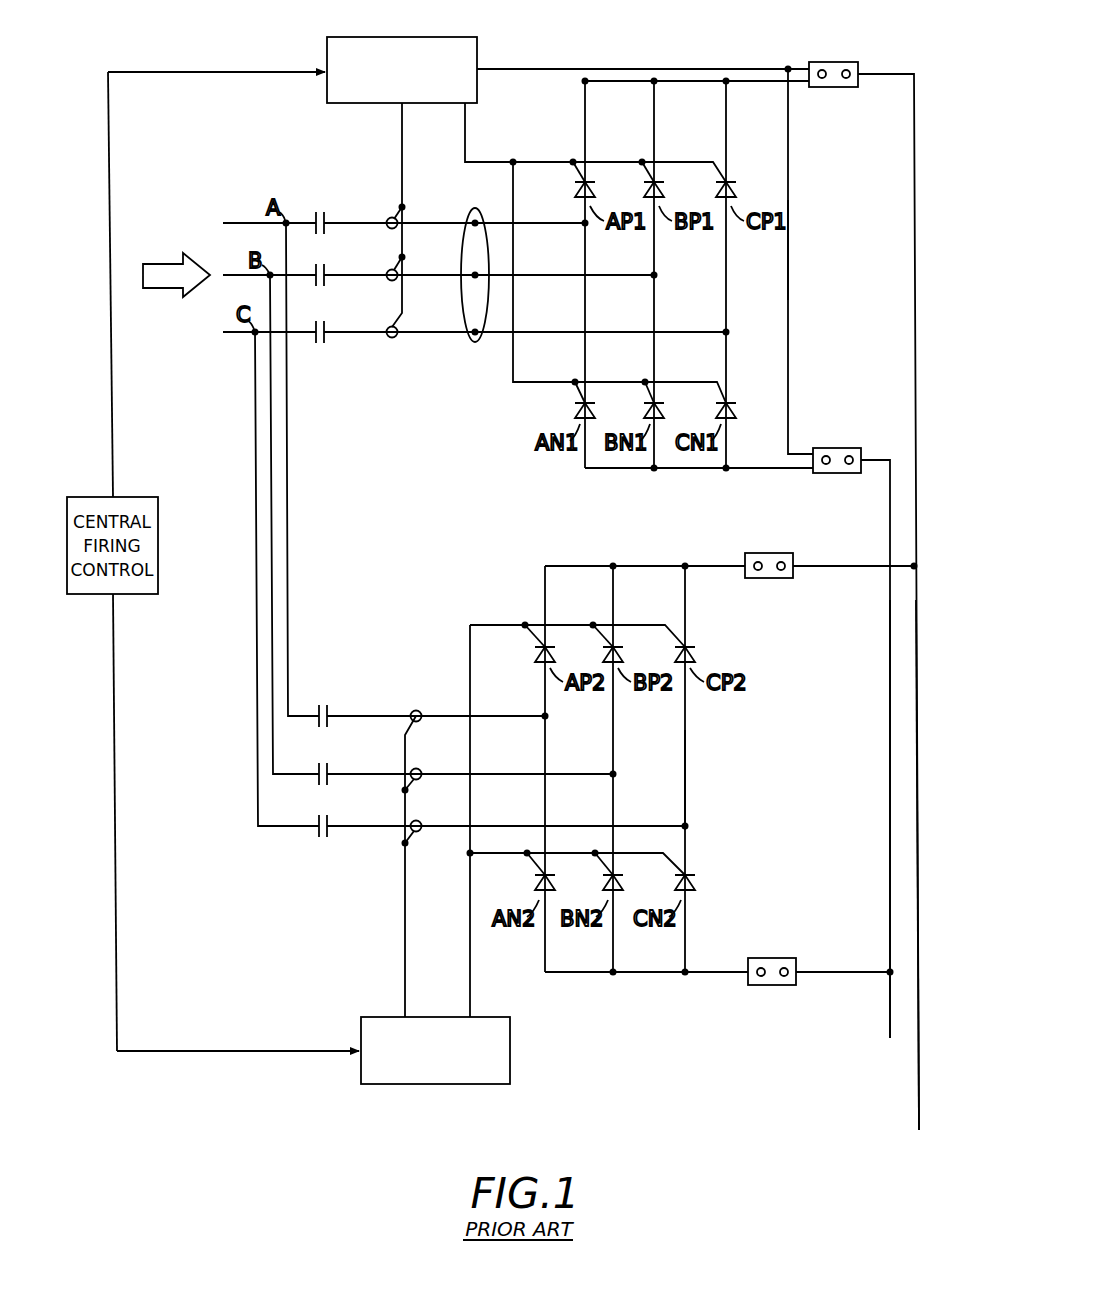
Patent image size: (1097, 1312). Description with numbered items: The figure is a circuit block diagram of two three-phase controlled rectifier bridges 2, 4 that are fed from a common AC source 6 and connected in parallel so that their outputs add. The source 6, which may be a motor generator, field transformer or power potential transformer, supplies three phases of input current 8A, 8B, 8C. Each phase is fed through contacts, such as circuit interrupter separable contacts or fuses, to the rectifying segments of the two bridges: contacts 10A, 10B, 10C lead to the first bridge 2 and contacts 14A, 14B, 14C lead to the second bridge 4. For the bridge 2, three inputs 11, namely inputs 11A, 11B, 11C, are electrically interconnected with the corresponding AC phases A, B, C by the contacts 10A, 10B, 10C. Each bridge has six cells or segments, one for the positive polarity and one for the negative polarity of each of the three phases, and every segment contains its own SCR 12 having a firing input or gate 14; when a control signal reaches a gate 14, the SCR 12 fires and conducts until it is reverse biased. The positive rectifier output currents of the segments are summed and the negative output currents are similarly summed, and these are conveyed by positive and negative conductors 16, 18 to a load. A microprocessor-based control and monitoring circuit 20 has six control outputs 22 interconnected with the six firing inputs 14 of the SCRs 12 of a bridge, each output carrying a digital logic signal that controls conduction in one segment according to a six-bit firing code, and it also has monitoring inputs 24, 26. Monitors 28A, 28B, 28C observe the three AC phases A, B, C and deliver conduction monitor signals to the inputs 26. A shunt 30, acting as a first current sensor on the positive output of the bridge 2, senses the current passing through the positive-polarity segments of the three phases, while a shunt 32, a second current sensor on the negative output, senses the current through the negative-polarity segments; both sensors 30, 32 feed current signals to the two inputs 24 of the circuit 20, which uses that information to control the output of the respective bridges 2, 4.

The controlled rectifier bridge 2 is at (862, 254).
The controlled rectifier bridge 4 is at (779, 789).
The AC source 6 is at (162, 262).
The phase current input 8A is at (236, 221).
The phase current input 8B is at (236, 273).
The phase current input 8C is at (240, 334).
The contact 10A is at (316, 212).
The contact 10B is at (324, 266).
The contact 10C is at (320, 344).
The inputs 11 is at (471, 212).
The input 11A is at (464, 234).
The input 11B is at (464, 287).
The input 11C is at (464, 343).
The SCR 12 is at (590, 197).
The firing input 14 is at (575, 178).
The contact 14A is at (326, 708).
The contact 14B is at (326, 766).
The contact 14C is at (326, 820).
The positive conductor 16 is at (917, 1094).
The negative conductor 18 is at (889, 1011).
The control and monitoring circuit 20 is at (392, 37).
The control outputs 22 is at (468, 105).
The monitoring inputs 24 is at (480, 66).
The monitoring inputs 26 is at (400, 105).
The monitor 28A is at (388, 218).
The monitor 28B is at (388, 281).
The monitor 28C is at (388, 338).
The shunt 30 is at (825, 62).
The shunt 32 is at (828, 448).